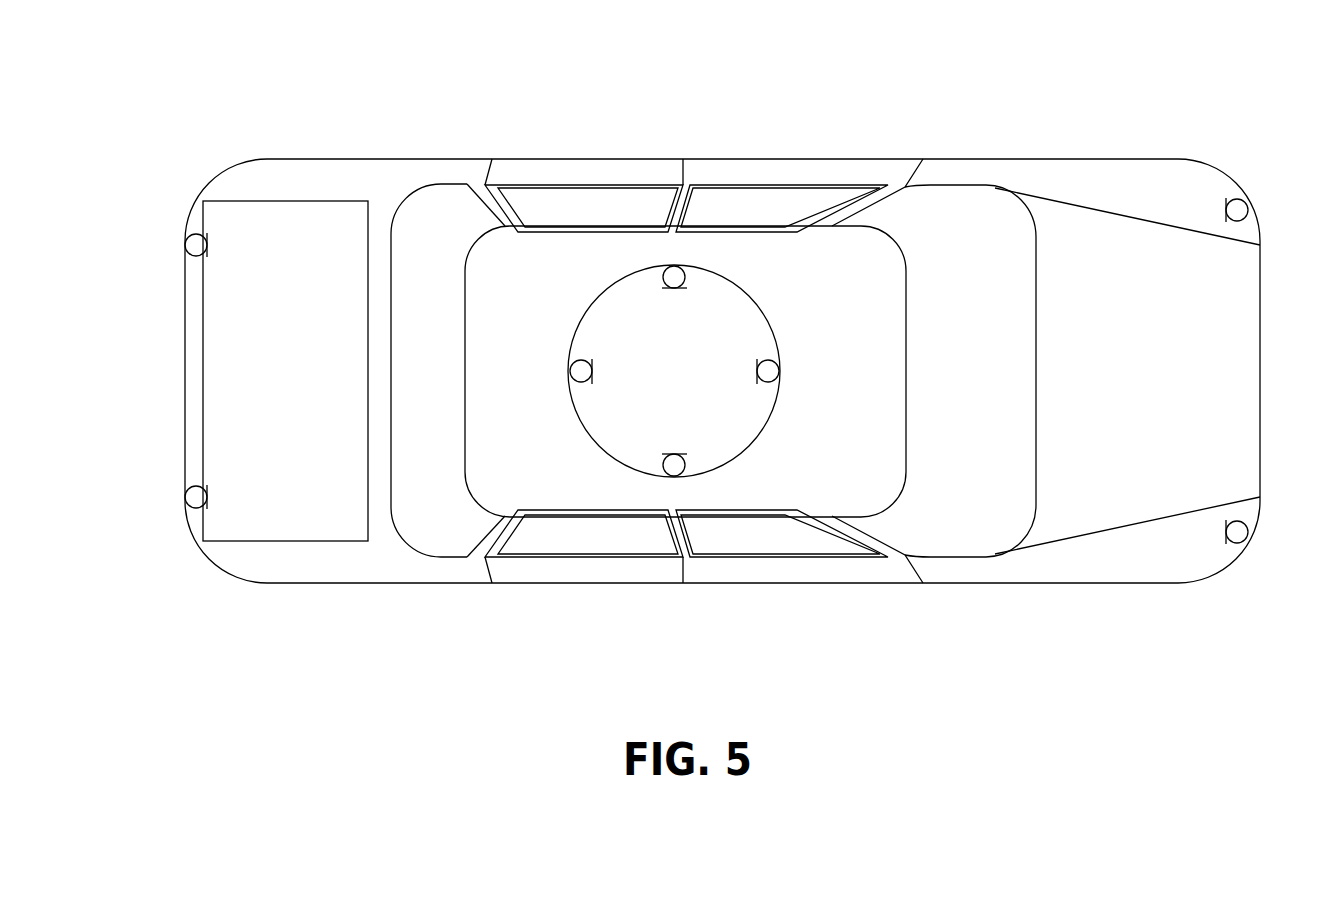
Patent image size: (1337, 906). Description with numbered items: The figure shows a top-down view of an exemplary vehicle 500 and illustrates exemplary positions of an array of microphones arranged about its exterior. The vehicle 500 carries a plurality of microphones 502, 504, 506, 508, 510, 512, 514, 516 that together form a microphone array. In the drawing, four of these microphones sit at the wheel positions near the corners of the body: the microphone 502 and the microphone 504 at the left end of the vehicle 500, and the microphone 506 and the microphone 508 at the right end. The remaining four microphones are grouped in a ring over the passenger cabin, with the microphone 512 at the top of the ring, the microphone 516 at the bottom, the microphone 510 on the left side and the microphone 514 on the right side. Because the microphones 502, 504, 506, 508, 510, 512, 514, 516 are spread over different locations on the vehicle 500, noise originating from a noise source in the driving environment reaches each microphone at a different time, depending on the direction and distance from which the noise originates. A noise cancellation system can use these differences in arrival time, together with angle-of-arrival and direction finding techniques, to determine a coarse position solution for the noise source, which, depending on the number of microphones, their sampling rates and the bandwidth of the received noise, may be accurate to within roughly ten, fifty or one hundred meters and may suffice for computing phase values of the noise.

The vehicle 500 is at (343, 78).
The microphone 502 is at (188, 237).
The microphone 504 is at (188, 488).
The microphone 506 is at (1248, 203).
The microphone 508 is at (1250, 520).
The microphone 510 is at (593, 368).
The microphone 512 is at (673, 290).
The microphone 514 is at (756, 368).
The microphone 516 is at (678, 454).